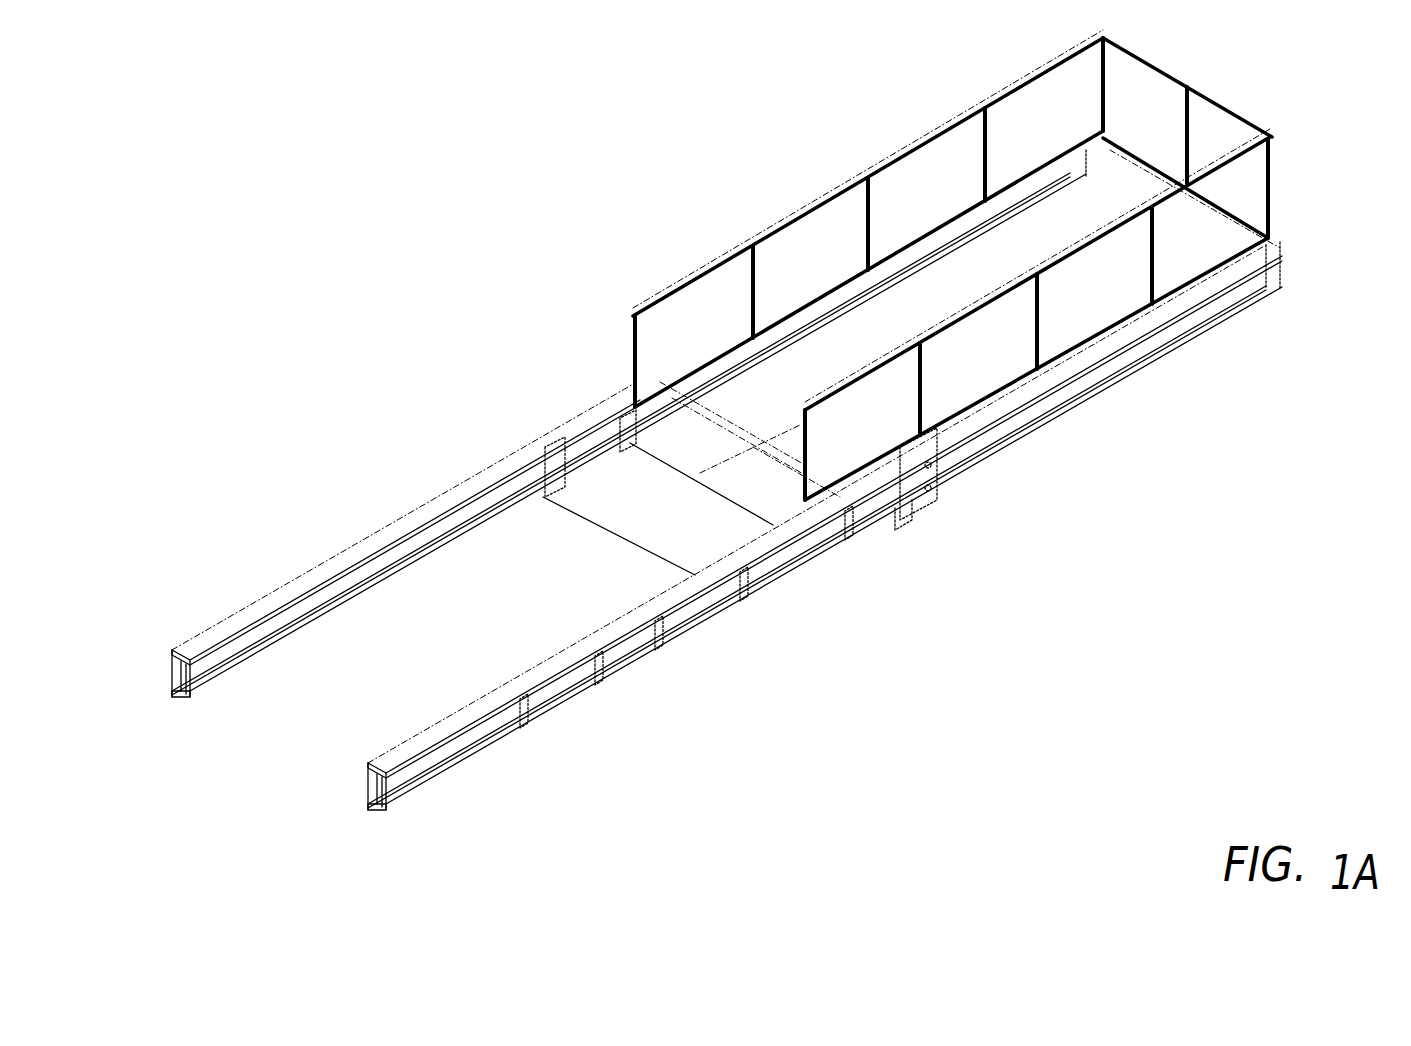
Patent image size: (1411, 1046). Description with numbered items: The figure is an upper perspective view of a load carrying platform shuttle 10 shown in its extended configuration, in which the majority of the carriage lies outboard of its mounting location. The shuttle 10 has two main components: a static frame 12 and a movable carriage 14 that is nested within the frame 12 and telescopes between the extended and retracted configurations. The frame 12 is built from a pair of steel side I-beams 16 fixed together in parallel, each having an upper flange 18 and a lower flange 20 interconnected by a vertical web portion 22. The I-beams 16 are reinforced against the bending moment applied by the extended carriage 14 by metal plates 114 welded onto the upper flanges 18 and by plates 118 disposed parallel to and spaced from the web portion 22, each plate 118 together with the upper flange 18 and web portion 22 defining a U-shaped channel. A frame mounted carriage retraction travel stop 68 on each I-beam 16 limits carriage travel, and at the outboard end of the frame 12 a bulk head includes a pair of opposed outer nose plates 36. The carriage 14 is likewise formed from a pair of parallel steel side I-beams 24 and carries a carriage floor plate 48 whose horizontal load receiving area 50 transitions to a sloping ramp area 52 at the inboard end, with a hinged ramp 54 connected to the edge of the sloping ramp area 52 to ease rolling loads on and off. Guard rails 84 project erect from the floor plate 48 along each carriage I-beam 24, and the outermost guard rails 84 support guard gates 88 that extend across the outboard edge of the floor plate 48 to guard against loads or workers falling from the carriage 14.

The load carrying platform shuttle 10 is at (725, 442).
The static frame 12 is at (688, 502).
The movable carriage 14 is at (995, 265).
The frame side I-beam 16 is at (688, 502).
The upper flange 18 is at (716, 517).
The lower flange 20 is at (240, 752).
The vertical web portion 22 is at (330, 739).
The carriage side I-beam 24 is at (1233, 227).
The outer nose plate 36 is at (963, 486).
The carriage floor plate 48 is at (1216, 138).
The horizontal load receiving area 50 is at (868, 218).
The sloping ramp area 52 is at (681, 424).
The ramp 54 is at (561, 438).
The carriage retraction travel stop 68 is at (727, 491).
The guard rail 84 is at (1037, 314).
The guard gate 88 is at (1282, 159).
The metal plate 114 is at (719, 504).
The plate 118 is at (686, 617).